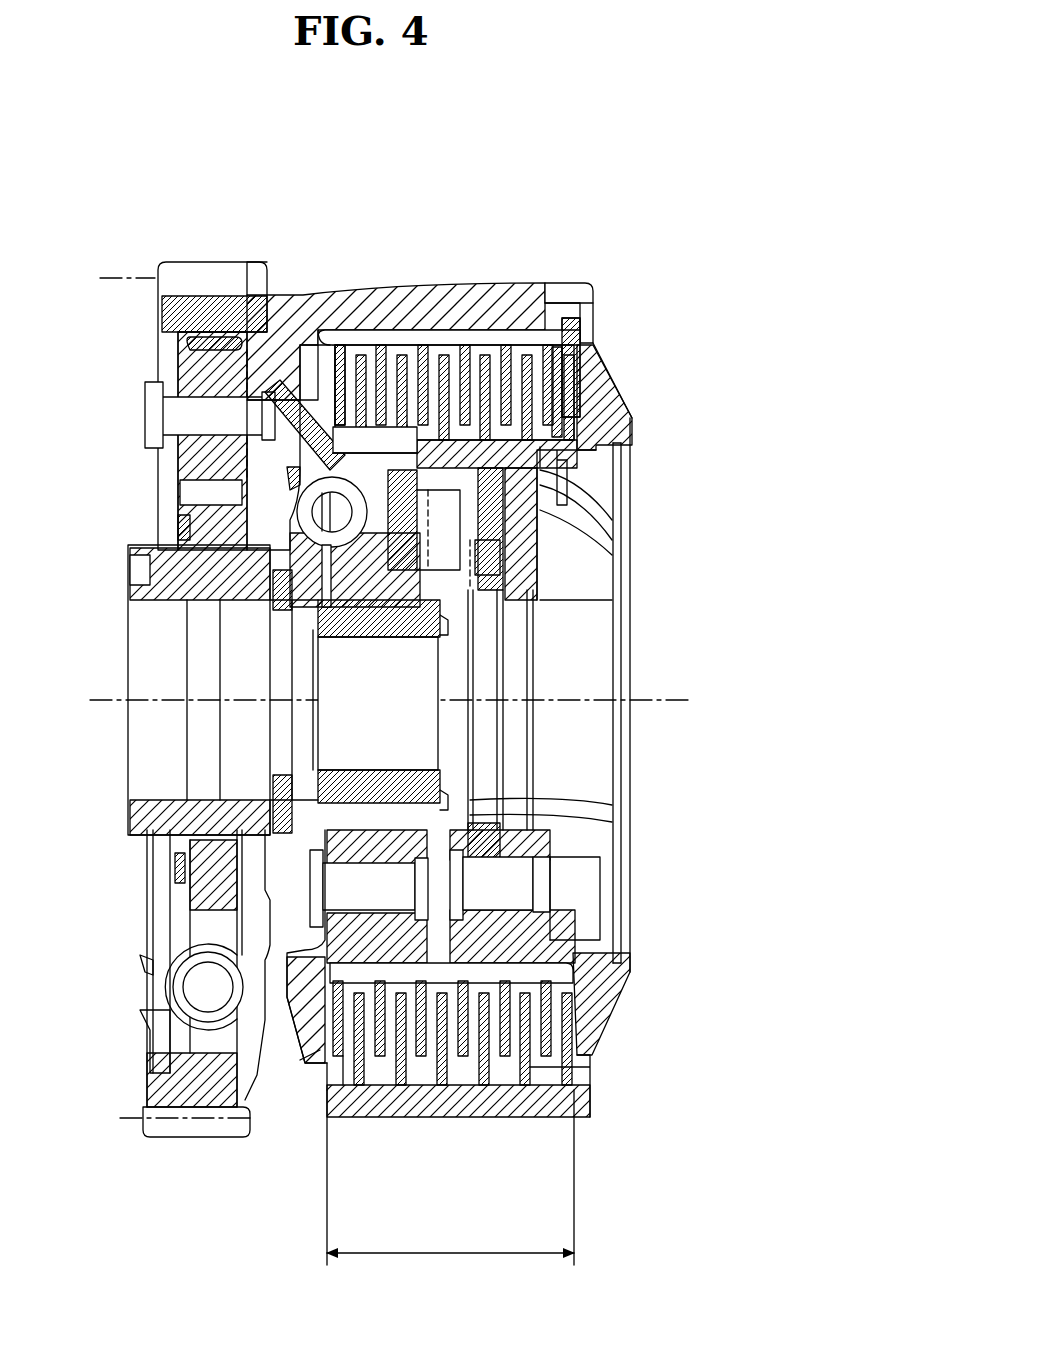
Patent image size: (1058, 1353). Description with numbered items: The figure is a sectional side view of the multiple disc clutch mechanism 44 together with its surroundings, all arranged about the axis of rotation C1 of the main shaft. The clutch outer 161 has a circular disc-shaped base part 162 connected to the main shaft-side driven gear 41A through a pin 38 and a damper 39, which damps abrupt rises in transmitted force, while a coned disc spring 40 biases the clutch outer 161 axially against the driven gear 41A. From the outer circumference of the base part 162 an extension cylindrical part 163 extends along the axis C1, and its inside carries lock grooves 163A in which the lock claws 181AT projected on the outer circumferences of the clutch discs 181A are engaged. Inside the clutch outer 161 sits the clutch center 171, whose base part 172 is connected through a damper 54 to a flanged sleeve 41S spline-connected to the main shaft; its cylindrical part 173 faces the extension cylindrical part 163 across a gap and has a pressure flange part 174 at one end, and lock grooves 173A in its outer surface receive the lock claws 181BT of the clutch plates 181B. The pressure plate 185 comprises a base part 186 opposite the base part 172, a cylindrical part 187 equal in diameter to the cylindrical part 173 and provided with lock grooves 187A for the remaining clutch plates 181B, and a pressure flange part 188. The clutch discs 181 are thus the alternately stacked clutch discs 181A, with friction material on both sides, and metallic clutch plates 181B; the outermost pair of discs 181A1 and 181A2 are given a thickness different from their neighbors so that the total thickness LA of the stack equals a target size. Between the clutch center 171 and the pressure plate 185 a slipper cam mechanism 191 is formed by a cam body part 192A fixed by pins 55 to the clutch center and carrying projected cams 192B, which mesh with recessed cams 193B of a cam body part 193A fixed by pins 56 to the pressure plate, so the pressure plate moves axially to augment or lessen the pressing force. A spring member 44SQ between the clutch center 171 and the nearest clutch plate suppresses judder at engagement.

The clutch mechanism 44 is at (531, 625).
The spring member 44SQ is at (318, 1005).
The clutch discs 181 is at (683, 156).
The clutch discs 181A is at (500, 345).
The clutch disc 181A1 is at (335, 345).
The clutch disc 181A2 is at (566, 318).
The clutch plates 181B is at (587, 1065).
The lock claws 181BT is at (372, 347).
The lock claws 181AT is at (343, 1090).
The cylindrical part 173 is at (286, 383).
The lock grooves 173A is at (345, 340).
The clutch center 171 is at (258, 335).
The base part 172 is at (284, 388).
The pressure flange part 174 is at (308, 345).
The clutch outer 161 is at (580, 290).
The extension cylindrical part 163 is at (580, 286).
The lock grooves 163A is at (330, 1100).
The main shaft-side driven gear 41A is at (160, 305).
The flanged sleeve 41S is at (420, 635).
The pin 38 is at (150, 405).
The damper 39 is at (150, 995).
The coned disc spring 40 is at (165, 525).
The base part 162 is at (180, 470).
The pressure plate 185 is at (620, 372).
The pressure flange part 188 is at (602, 398).
The cylindrical part 187 is at (548, 476).
The lock grooves 187A is at (545, 452).
The base part 186 is at (605, 524).
The cam mechanism 191 is at (470, 622).
The cam body part 192A is at (470, 818).
The projected cams 192B is at (470, 600).
The cam body part 193A is at (470, 830).
The recessed cams 193B is at (468, 578).
The damper 54 is at (348, 605).
The pins 55 is at (370, 865).
The pins 56 is at (552, 900).
The axis of rotation C1 is at (648, 700).
The total thickness LA is at (450, 1177).